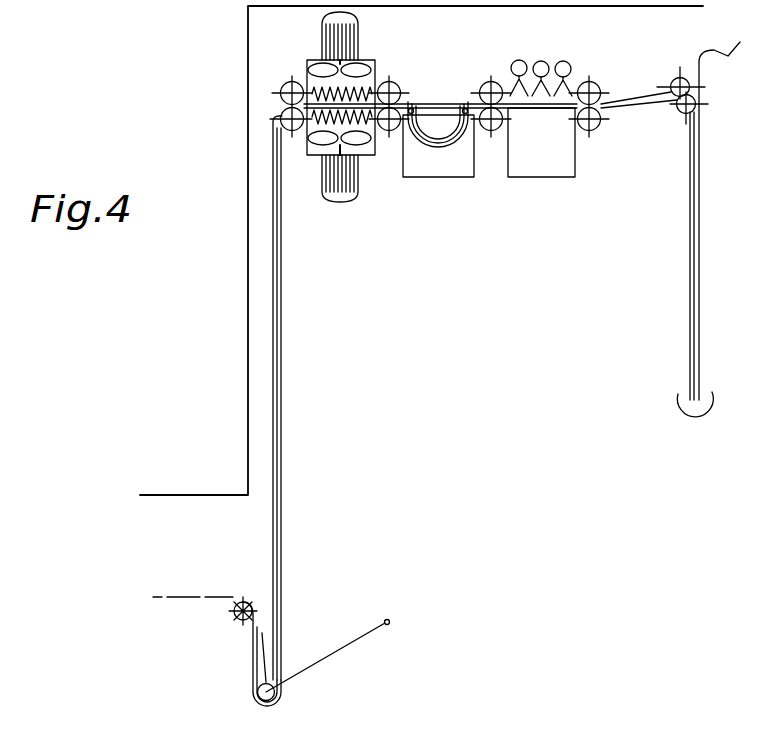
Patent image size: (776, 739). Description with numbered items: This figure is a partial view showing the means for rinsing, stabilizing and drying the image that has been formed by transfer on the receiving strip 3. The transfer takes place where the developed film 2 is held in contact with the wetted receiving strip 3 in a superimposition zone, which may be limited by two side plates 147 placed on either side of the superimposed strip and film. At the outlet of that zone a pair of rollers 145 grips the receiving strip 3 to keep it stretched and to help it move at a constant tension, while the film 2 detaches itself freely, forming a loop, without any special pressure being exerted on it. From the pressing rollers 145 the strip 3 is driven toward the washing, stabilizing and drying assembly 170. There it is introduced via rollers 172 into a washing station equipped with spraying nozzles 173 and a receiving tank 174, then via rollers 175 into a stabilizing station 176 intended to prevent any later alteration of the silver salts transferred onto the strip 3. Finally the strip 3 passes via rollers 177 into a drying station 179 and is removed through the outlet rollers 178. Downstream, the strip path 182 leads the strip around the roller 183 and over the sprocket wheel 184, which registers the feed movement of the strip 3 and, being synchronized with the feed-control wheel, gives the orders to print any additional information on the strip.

The developed film 2 is at (725, 215).
The receiving strip 3 is at (633, 107).
The pair of rollers 145 is at (689, 78).
The side plates 147 is at (698, 419).
The washing, stabilizing and drying assembly 170 is at (485, 199).
The rollers 172 is at (613, 67).
The spraying nozzles 173 is at (541, 60).
The receiving tank 174 is at (548, 178).
The rollers 175 is at (481, 84).
The stabilizing station 176 is at (445, 148).
The rollers 177 is at (393, 80).
The outlet rollers 178 is at (286, 80).
The drying station 179 is at (311, 160).
The web path 182 is at (295, 409).
The turning roller 183 is at (279, 705).
The sprocket wheel 184 is at (232, 608).